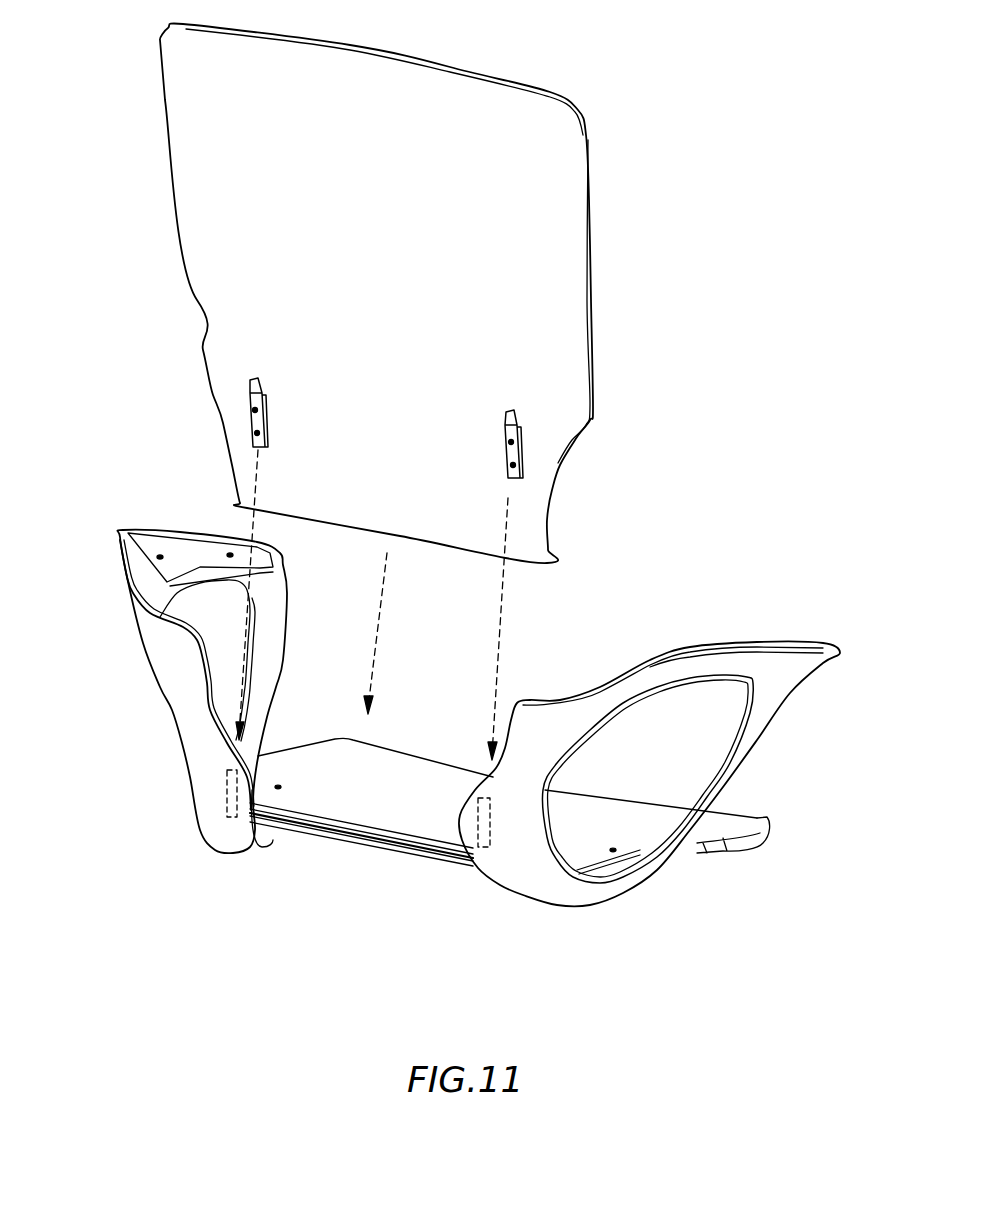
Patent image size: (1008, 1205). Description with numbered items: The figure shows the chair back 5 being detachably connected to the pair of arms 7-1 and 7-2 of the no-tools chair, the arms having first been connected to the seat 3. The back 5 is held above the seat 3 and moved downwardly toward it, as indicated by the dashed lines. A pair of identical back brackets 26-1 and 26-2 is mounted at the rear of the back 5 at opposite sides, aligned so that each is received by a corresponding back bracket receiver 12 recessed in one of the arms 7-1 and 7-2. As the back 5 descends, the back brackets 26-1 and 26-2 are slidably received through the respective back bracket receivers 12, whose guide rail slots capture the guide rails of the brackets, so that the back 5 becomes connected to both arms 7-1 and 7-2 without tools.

The chair back 5 is at (567, 235).
The back bracket 26-1 is at (523, 448).
The back bracket 26-2 is at (242, 425).
The seat 3 is at (393, 777).
The chair arm 7-1 is at (757, 752).
The chair arm 7-2 is at (185, 700).
The back bracket receiver 12 is at (227, 793).